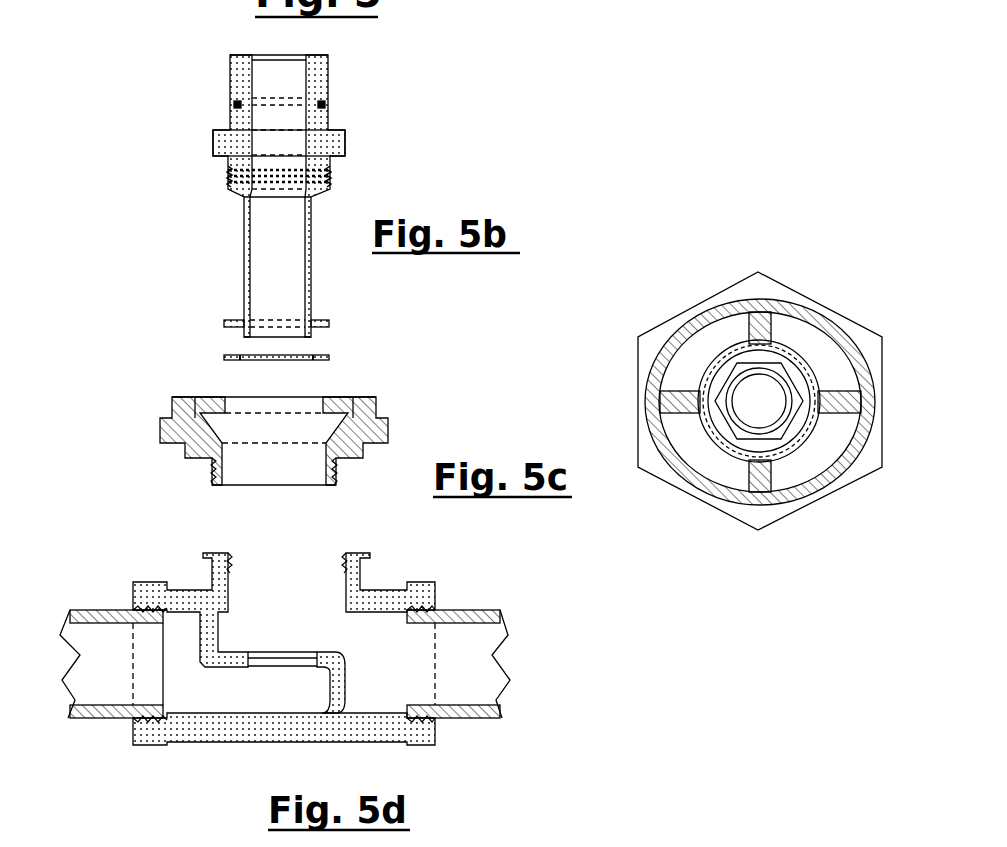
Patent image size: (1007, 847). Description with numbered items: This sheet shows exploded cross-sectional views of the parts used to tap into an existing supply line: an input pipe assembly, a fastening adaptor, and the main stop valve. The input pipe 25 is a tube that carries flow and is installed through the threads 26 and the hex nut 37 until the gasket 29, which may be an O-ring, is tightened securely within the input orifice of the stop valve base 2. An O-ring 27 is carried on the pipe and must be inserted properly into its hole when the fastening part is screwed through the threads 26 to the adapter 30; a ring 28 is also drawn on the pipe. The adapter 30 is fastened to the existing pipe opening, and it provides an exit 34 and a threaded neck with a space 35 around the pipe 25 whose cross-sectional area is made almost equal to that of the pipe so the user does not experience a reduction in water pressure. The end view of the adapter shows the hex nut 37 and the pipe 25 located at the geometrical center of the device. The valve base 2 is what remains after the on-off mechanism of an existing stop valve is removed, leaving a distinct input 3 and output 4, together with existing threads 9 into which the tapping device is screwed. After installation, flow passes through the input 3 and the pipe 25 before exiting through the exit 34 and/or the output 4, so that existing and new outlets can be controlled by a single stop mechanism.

In FIG. 5D, the valve base 2 is at (210, 728).
In FIG. 5D, the input 3 is at (142, 652).
In FIG. 5D, the output 4 is at (413, 658).
In FIG. 5D, the existing threads 9 is at (343, 560).
In FIG. 5B, the input pipe 25 is at (233, 73).
In FIG. 5C, the input pipe 25 is at (780, 382).
In FIG. 5B, the threads 26 is at (230, 172).
In FIG. 5B, the O-ring 27 is at (232, 104).
In FIG. 5B, the retaining ring 28 is at (233, 319).
In FIG. 5B, the gasket 29 is at (226, 356).
In FIG. 5B, the adapter 30 is at (390, 427).
In FIG. 5C, the adapter 30 is at (643, 350).
In FIG. 5B, the exit 34 is at (377, 410).
In FIG. 5B, the space 35 is at (373, 398).
In FIG. 5C, the space 35 is at (738, 363).
In FIG. 5B, the hex nut 37 is at (345, 145).
In FIG. 5C, the hex nut 37 is at (703, 342).